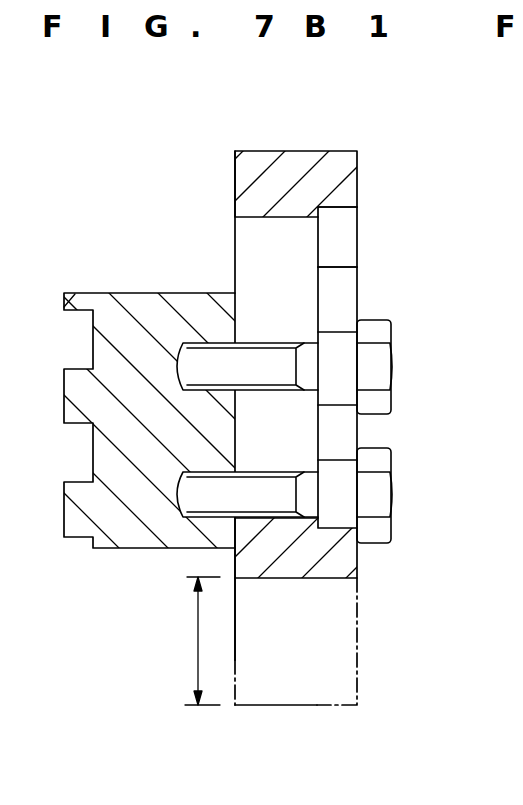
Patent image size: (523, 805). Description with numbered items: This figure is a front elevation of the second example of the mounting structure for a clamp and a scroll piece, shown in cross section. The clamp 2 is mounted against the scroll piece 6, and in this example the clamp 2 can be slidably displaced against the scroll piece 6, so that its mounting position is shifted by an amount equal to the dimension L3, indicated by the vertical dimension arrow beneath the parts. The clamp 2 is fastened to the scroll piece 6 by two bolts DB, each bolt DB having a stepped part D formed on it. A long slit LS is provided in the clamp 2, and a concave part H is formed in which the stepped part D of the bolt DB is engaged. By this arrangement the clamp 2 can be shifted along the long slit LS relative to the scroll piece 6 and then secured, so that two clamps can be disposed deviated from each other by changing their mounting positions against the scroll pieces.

The scroll piece 6 is at (115, 318).
The clamp 2 is at (322, 562).
The concave part H is at (318, 207).
The long slit LS is at (340, 300).
The stepped part D is at (333, 383).
The bolt DB is at (373, 372).
The dimension L3 is at (198, 638).